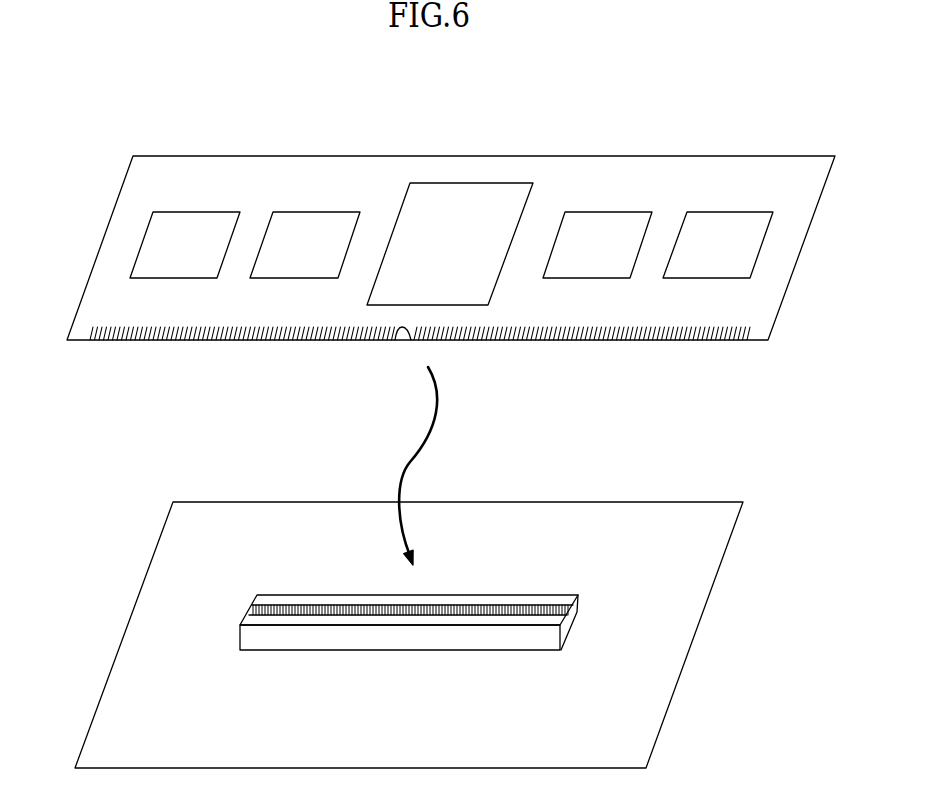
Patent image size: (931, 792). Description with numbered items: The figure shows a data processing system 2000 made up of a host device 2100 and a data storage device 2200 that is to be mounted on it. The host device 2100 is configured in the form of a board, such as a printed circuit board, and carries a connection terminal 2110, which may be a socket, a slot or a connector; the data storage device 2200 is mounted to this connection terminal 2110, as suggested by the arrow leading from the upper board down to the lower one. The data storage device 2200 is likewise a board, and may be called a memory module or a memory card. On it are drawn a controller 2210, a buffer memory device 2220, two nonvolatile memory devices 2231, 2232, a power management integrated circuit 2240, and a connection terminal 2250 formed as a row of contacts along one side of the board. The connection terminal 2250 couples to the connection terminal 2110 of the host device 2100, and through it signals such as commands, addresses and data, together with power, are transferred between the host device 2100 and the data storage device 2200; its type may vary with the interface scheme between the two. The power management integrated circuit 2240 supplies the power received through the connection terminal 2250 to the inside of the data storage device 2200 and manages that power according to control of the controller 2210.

The data processing system 2000 is at (108, 114).
The data storage device 2200 is at (451, 272).
The power management integrated circuit 2240 is at (185, 245).
The buffer memory device 2220 is at (305, 245).
The controller 2210 is at (450, 244).
The nonvolatile memory device 2231 is at (597, 245).
The nonvolatile memory device 2232 is at (718, 245).
The connection terminal 2250 is at (113, 341).
The host device 2100 is at (409, 635).
The connection terminal 2110 is at (601, 589).